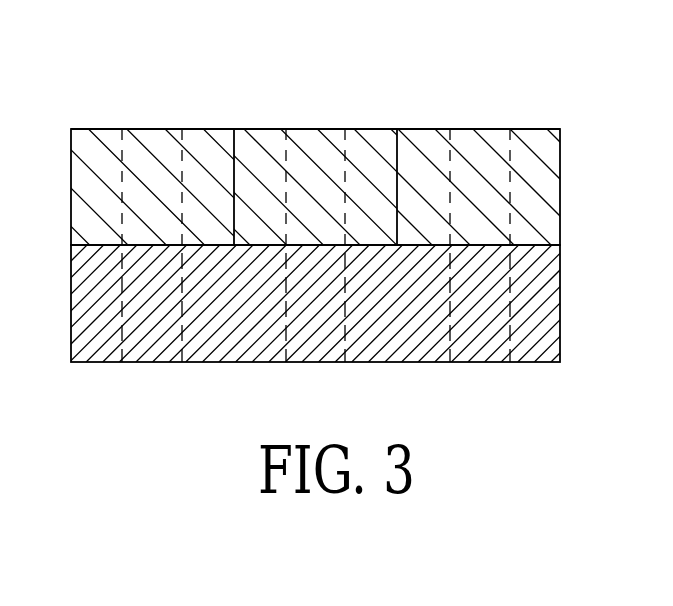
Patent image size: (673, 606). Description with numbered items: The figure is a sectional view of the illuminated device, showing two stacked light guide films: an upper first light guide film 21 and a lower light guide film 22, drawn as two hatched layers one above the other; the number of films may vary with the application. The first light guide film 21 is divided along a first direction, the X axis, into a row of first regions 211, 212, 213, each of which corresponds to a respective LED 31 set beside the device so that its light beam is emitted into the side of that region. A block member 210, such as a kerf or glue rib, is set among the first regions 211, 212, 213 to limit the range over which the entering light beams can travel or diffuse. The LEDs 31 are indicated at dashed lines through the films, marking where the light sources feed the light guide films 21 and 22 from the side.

The first light guide film 21 is at (331, 128).
The light guide film 22 is at (582, 246).
The block member 210 is at (249, 130).
The first region 211 is at (207, 133).
The first region 212 is at (379, 134).
The first region 213 is at (538, 134).
The LED 31 is at (122, 150).